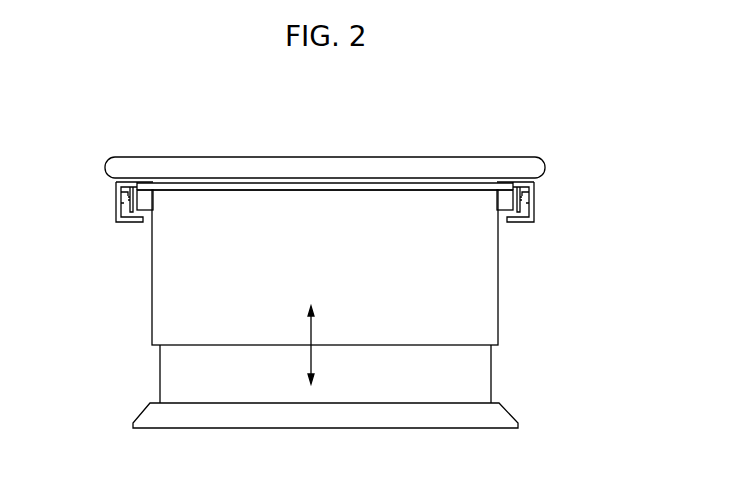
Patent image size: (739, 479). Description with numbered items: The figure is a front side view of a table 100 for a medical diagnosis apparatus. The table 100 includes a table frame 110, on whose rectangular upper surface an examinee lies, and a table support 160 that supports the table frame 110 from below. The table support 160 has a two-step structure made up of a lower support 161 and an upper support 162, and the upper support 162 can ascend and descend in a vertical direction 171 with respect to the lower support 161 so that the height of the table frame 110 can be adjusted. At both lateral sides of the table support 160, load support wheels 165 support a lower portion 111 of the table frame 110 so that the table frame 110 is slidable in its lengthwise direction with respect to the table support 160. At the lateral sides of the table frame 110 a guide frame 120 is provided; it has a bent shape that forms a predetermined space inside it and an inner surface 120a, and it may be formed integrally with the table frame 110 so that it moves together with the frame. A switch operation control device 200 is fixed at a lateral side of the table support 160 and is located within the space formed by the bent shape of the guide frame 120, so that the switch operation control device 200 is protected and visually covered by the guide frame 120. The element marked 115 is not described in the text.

The table 100 is at (548, 81).
The table frame 110 is at (537, 185).
The lower portion 111 is at (122, 193).
The top rail 115 is at (540, 163).
The guide frame 120 is at (125, 223).
The inner surface 120a is at (120, 204).
The table support 160 is at (289, 309).
The lower support 161 is at (163, 380).
The upper support 162 is at (155, 328).
The load support wheels 165 is at (133, 187).
The vertical direction 171 is at (313, 334).
The switch operation control device 200 is at (147, 199).